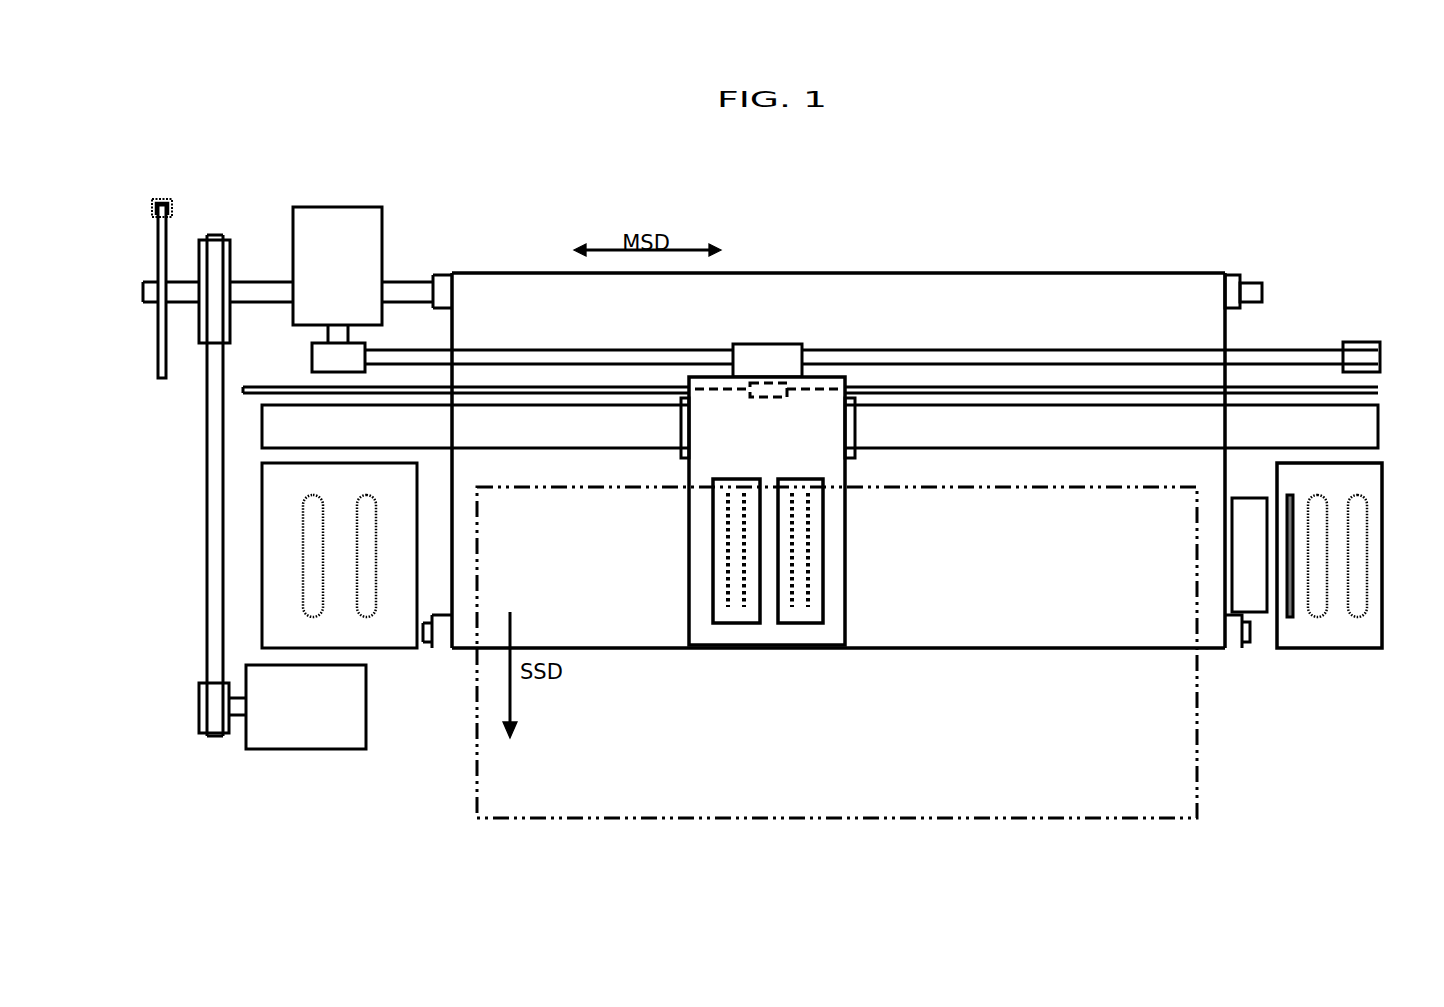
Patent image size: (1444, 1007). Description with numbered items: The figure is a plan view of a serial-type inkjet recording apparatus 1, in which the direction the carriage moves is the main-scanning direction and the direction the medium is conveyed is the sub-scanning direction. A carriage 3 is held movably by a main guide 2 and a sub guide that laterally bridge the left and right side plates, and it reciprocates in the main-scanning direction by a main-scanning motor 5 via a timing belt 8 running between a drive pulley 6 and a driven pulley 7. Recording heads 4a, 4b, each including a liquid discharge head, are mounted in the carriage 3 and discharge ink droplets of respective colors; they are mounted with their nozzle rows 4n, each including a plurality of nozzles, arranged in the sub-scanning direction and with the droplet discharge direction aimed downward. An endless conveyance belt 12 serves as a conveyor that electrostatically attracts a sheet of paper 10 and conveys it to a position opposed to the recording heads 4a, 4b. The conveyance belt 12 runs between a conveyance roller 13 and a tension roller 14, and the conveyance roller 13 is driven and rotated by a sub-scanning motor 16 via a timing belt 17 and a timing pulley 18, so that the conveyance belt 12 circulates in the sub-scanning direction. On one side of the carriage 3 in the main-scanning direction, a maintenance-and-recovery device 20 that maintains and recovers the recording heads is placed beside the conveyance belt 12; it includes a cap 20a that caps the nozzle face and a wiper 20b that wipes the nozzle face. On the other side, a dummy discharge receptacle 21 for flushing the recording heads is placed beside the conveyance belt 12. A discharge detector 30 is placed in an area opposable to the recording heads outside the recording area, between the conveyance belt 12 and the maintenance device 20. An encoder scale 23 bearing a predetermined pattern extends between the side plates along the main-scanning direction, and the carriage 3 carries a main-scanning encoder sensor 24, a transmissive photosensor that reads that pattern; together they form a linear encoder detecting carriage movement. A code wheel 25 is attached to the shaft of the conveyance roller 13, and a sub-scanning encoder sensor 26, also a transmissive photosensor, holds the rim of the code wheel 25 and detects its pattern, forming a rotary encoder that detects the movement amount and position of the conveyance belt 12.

The serial-type inkjet recording apparatus 1 is at (1178, 167).
The main guide 2 is at (1375, 428).
The carriage 3 is at (838, 538).
The recording head 4a is at (735, 614).
The recording head 4b is at (798, 614).
The nozzle rows 4n is at (728, 577).
The main-scanning motor 5 is at (338, 207).
The drive pulley 6 is at (312, 346).
The driven pulley 7 is at (1364, 341).
The timing belt 8 is at (540, 356).
The sheet of paper 10 is at (1198, 770).
The conveyance belt 12 is at (990, 280).
The conveyance roller 13 is at (1232, 282).
The tension roller 14 is at (1233, 641).
The sub-scanning motor 16 is at (322, 746).
The timing belt 17 is at (212, 483).
The timing pulley 18 is at (230, 242).
The maintenance-and-recovery device 20 is at (1378, 487).
The cap 20a is at (1358, 621).
The wiper 20b is at (1291, 621).
The dummy discharge receptacle 21 is at (386, 640).
The encoder scale 23 is at (1380, 392).
The main-scanning encoder sensor 24 is at (765, 398).
The code wheel 25 is at (158, 335).
The sub-scanning encoder sensor 26 is at (163, 198).
The discharge detector 30 is at (1262, 620).